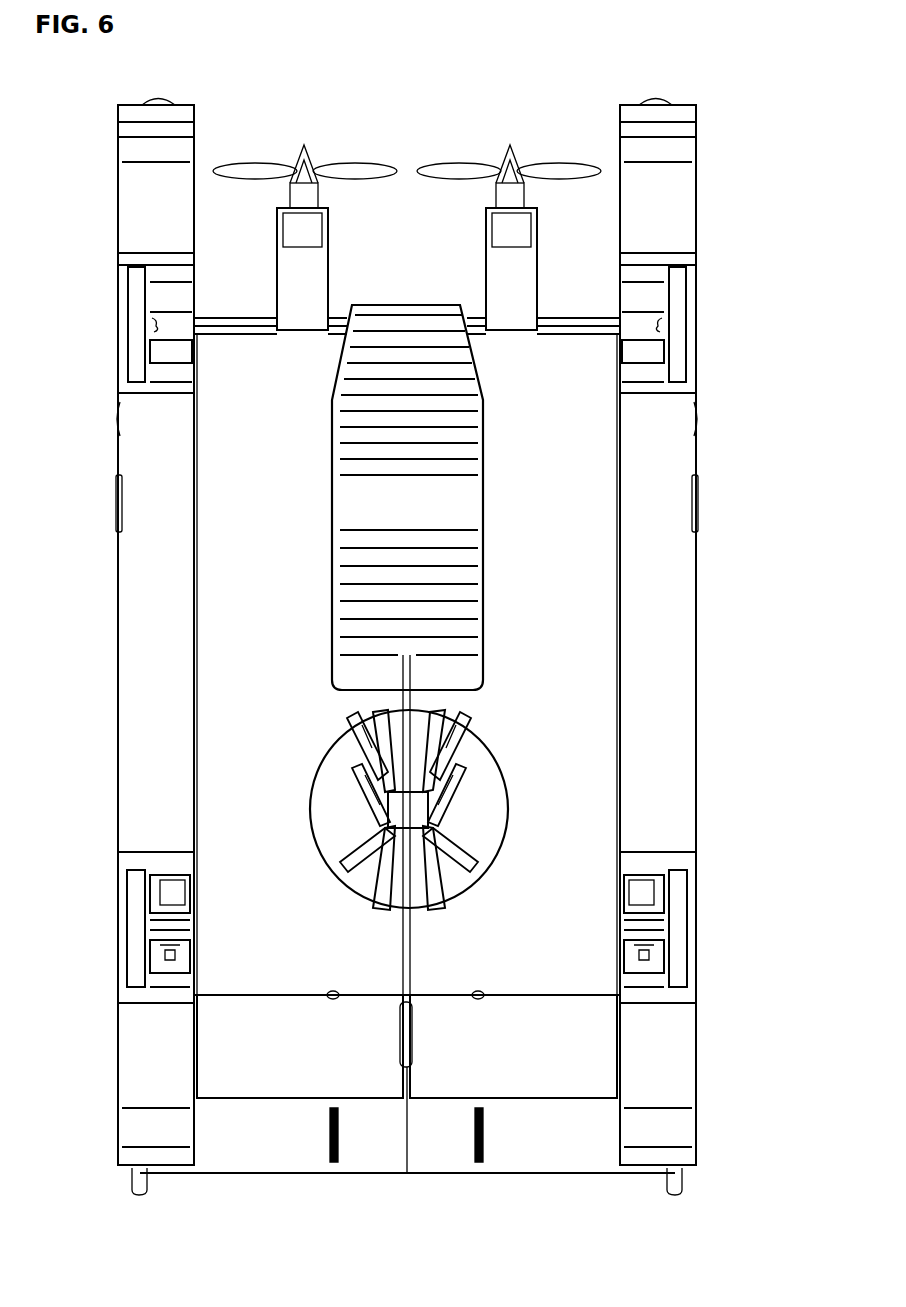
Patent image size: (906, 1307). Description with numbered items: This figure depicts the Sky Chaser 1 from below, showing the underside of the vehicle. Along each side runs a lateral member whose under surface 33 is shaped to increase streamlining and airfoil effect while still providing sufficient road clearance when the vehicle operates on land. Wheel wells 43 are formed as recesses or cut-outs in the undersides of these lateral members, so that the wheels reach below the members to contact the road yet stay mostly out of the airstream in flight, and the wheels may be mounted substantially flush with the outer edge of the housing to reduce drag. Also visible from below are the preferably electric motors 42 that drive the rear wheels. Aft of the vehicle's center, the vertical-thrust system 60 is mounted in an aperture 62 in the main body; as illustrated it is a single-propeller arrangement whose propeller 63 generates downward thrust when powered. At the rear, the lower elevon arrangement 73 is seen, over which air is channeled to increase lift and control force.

The watercraft 1 is at (730, 568).
The under surface 33 is at (150, 628).
The electric motors 42 is at (190, 920).
The wheel wells 43 is at (178, 353).
The vertical-thrust system 60 is at (420, 810).
The aperture 62 is at (323, 812).
The propeller 63 is at (358, 850).
The lower elevon arrangement 73 is at (336, 1067).